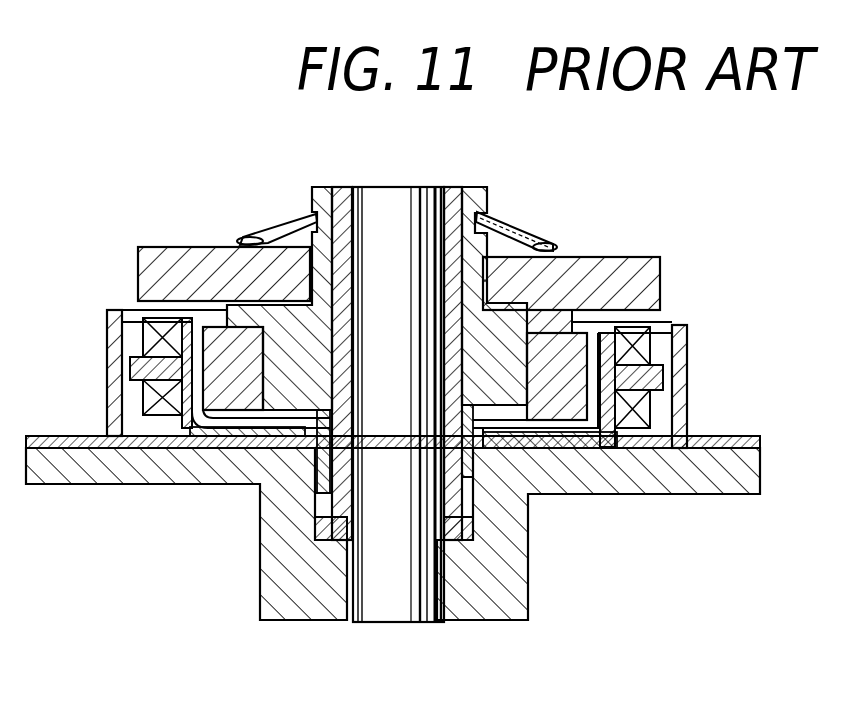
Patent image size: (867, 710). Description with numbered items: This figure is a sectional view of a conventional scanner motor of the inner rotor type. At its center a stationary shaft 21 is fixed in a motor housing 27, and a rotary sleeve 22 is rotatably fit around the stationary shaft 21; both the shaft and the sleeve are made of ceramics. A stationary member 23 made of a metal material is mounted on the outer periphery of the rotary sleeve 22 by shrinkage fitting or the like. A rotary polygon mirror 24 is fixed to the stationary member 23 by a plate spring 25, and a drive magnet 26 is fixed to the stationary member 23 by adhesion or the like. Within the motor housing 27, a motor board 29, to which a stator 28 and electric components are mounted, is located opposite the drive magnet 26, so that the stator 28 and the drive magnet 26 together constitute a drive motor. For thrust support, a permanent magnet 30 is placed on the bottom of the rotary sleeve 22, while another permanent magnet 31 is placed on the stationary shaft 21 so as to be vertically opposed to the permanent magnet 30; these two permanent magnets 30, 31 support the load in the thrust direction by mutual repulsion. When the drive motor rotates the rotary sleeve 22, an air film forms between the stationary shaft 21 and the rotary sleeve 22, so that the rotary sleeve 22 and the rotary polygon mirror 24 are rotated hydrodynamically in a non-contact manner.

The stationary shaft 21 is at (397, 207).
The rotary sleeve 22 is at (455, 207).
The stationary member 23 is at (473, 198).
The rotary polygon mirror 24 is at (153, 253).
The plate spring 25 is at (512, 230).
The drive magnet 26 is at (233, 398).
The motor housing 27 is at (477, 603).
The stator 28 is at (640, 342).
The motor board 29 is at (720, 455).
The permanent magnet 30 is at (468, 492).
The permanent magnet 31 is at (473, 530).